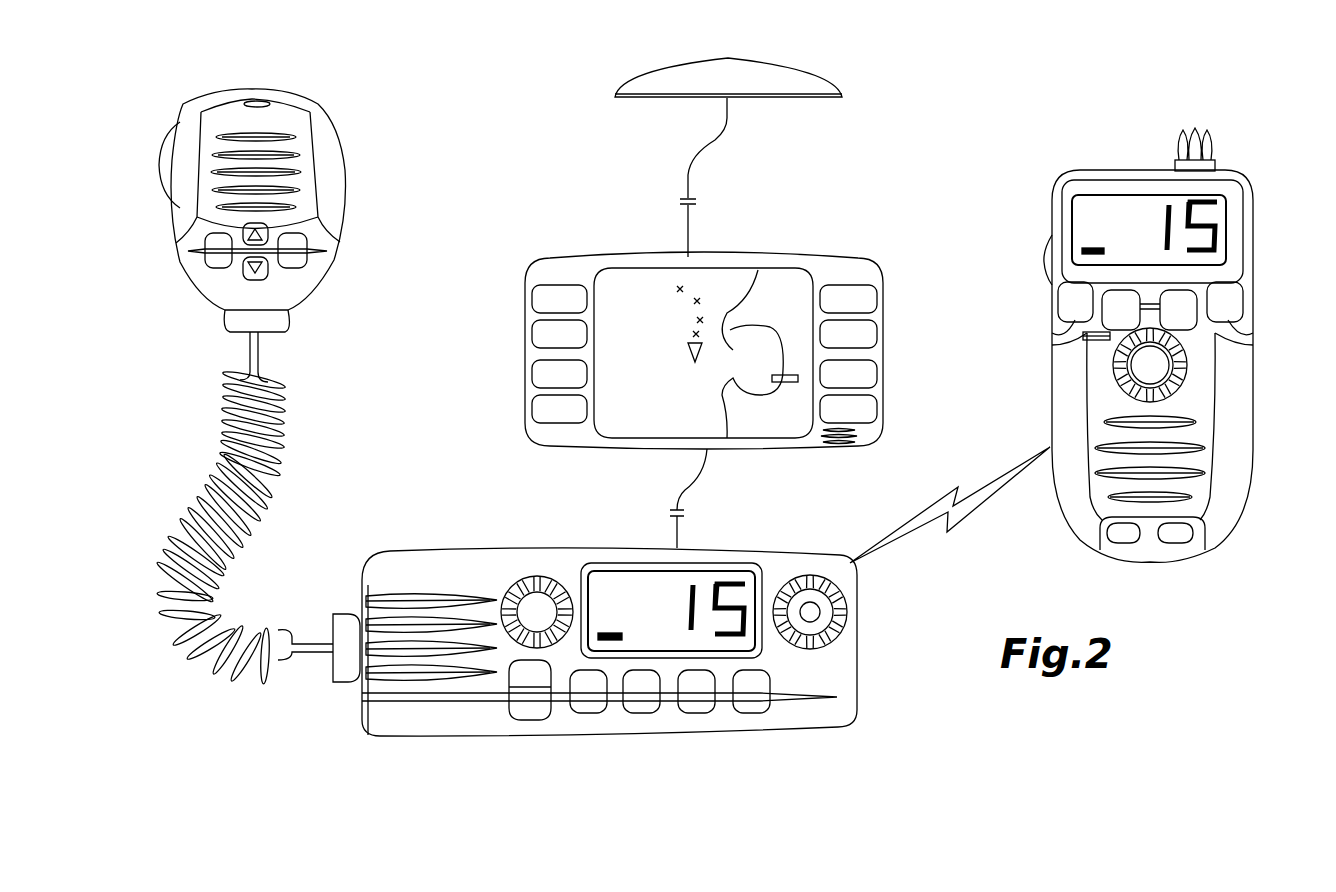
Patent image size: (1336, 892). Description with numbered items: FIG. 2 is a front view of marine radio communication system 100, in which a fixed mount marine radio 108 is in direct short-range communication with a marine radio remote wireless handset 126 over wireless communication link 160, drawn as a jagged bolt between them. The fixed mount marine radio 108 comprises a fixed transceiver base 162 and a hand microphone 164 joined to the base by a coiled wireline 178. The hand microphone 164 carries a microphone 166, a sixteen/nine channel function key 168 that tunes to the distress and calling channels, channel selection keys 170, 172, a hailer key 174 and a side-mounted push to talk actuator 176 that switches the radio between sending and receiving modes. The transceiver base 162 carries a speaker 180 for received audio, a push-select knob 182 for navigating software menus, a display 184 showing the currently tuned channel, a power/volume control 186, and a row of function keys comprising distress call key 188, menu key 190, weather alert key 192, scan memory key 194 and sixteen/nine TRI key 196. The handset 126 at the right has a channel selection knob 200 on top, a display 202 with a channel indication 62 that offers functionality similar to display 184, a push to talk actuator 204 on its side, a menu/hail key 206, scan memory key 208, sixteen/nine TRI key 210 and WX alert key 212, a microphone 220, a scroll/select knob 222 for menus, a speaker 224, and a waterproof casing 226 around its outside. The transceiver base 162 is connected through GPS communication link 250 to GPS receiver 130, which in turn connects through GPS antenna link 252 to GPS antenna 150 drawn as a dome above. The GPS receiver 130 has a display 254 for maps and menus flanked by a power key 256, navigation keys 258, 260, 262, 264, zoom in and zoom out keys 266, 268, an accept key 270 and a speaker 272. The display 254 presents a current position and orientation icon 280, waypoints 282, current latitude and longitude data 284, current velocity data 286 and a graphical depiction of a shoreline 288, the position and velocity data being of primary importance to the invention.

The marine radio communication system 100 is at (571, 48).
The fixed mount marine radio 108 is at (618, 628).
The marine radio remote wireless handset 126 is at (1133, 320).
The GPS receiver 130 is at (704, 338).
The GPS antenna 150 is at (800, 68).
The wireless communication link 160 is at (963, 517).
The fixed transceiver base 162 is at (781, 552).
The hand microphone 164 is at (343, 175).
The microphone 166 is at (296, 138).
The 16/9 channel function key 168 is at (207, 266).
The channel selection key 170 is at (177, 224).
The channel selection key 172 is at (249, 279).
The hailer key 174 is at (306, 266).
The push-to-talk button 176 is at (163, 142).
The wireline 178 is at (287, 437).
The speaker 180 is at (410, 624).
The push-select knob 182 is at (503, 603).
The display 184 is at (645, 576).
The power/volume control 186 is at (845, 611).
The distress call key 188 is at (528, 722).
The menu key 190 is at (589, 716).
The weather (WX) alert key 192 is at (646, 716).
The scan memory key 194 is at (698, 716).
The 16/9 TRI key 196 is at (753, 716).
The channel selection knob 200 is at (1202, 135).
The display 202 is at (1166, 198).
The push to talk actuator 204 is at (1047, 280).
The menu/hail key 206 is at (1076, 322).
The scan memory key 208 is at (1110, 290).
The 16/9 TRI key 210 is at (1192, 332).
The WX alert key 212 is at (1230, 322).
The microphone 220 is at (1095, 340).
The scroll/select knob 222 is at (1188, 378).
The speaker 224 is at (1185, 475).
The waterproof casing 226 is at (1225, 521).
The GPS communication link 250 is at (680, 501).
The GPS antenna link 252 is at (725, 125).
The display 254 is at (611, 323).
The power key 256 is at (533, 298).
The navigation key 258 is at (533, 334).
The navigation key 260 is at (533, 373).
The navigation key 262 is at (533, 410).
The navigation key 264 is at (876, 410).
The zoom in key 266 is at (876, 334).
The zoom out key 268 is at (876, 373).
The accept key 270 is at (875, 299).
The speaker 272 is at (838, 444).
The current position and orientation icon 280 is at (687, 352).
The waypoints 282 is at (702, 318).
The current latitude and longitude data 284 is at (630, 268).
The current velocity data 286 is at (630, 428).
The shoreline 288 is at (782, 330).
The channel display 62 is at (1223, 201).